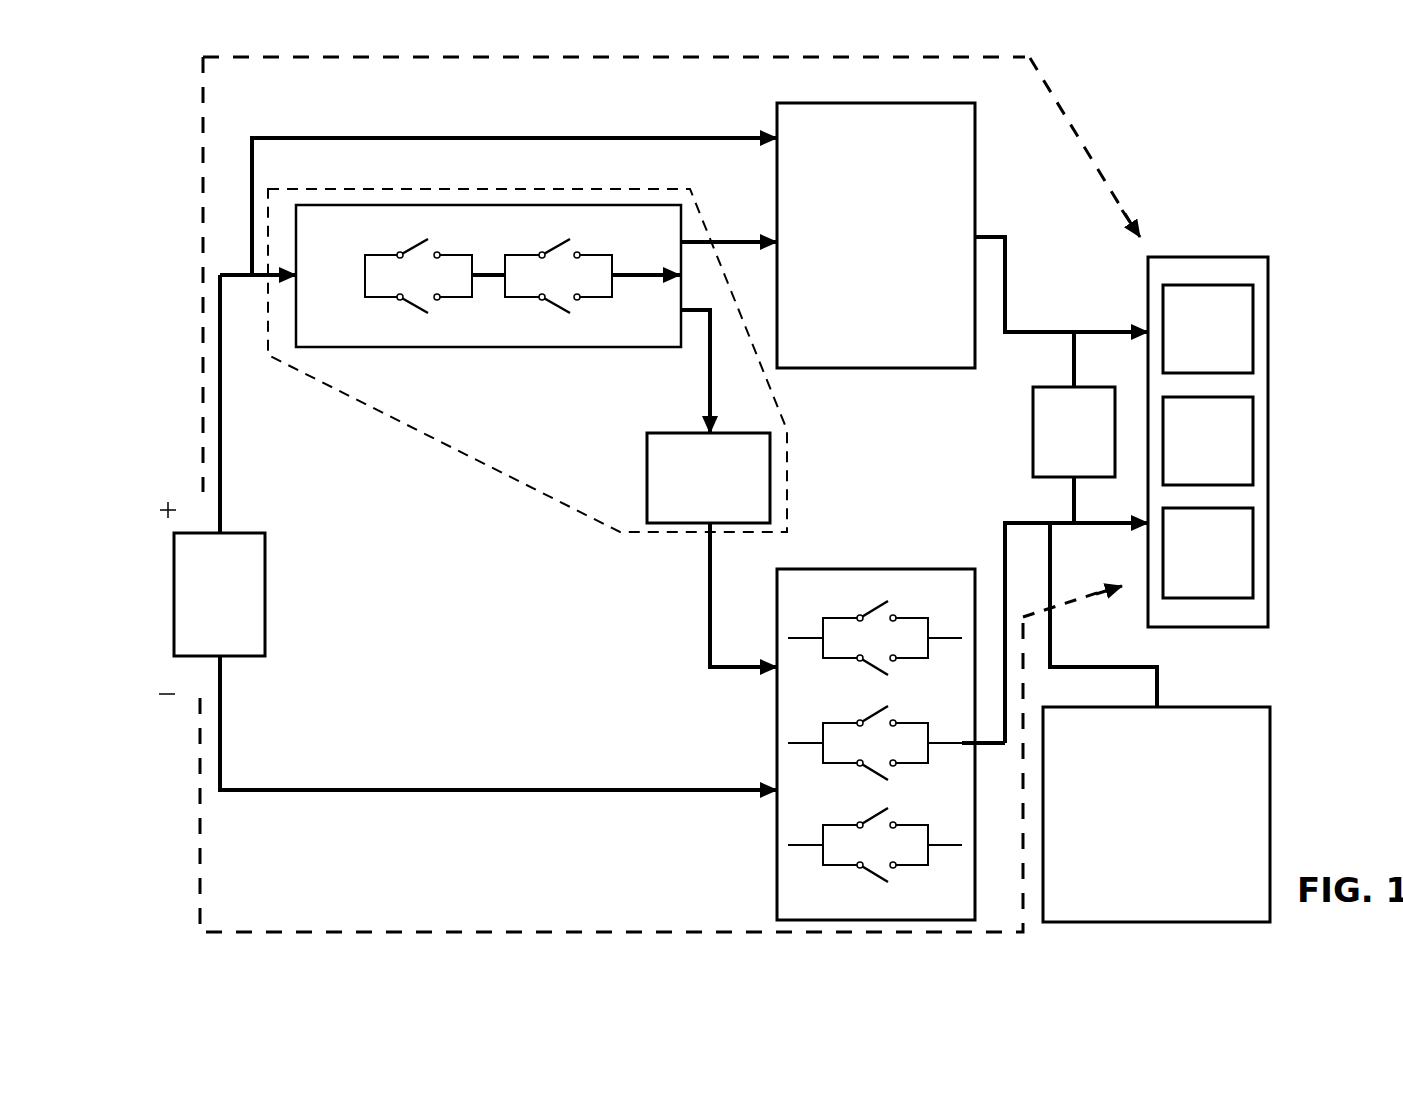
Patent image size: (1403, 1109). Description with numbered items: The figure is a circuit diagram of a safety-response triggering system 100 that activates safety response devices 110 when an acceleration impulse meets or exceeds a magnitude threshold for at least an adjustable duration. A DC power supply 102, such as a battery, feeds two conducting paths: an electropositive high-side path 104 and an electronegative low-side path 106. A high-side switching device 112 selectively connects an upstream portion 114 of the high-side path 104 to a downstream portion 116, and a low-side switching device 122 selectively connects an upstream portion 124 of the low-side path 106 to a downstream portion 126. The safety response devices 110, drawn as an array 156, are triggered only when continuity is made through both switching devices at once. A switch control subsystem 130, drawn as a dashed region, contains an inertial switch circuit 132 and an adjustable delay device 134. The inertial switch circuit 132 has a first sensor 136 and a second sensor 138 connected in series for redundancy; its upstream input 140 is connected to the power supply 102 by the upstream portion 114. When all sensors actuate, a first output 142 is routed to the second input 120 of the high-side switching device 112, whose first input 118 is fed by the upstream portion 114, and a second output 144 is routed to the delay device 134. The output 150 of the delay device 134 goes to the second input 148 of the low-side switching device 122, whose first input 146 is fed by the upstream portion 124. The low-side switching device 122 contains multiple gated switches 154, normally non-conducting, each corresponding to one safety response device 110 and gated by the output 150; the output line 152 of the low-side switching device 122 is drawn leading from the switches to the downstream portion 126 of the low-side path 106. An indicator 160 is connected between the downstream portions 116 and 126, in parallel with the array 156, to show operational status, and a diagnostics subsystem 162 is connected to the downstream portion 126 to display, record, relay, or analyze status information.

The safety-response triggering system 100 is at (1172, 157).
The DC power supply 102 is at (212, 598).
The high-side path 104 is at (432, 58).
The low-side path 106 is at (325, 931).
The safety response devices 110 is at (1208, 441).
The high-side switching device 112 is at (876, 235).
The upstream portion of the high-side path 114 is at (523, 138).
The downstream portion of the high-side path 116 is at (1007, 290).
The first input of the high-side switching device 118 is at (780, 140).
The second input of the high-side switching device 120 is at (780, 245).
The low-side switching device 122 is at (876, 744).
The upstream portion of the low-side path 124 is at (338, 789).
The downstream portion of the low-side path 126 is at (1003, 552).
The switch control subsystem 130 is at (498, 470).
The inertial switch circuit 132 is at (488, 276).
The delay device 134 is at (647, 468).
The first sensor 136 is at (368, 298).
The second sensor 138 is at (508, 298).
The upstream input of the inertial switch circuit 140 is at (302, 277).
The first output of the inertial switch circuit 142 is at (738, 240).
The second output of the inertial switch circuit 144 is at (695, 318).
The first input of the low-side switching device 146 is at (780, 788).
The second input of the low-side switching device 148 is at (780, 666).
The output of the delay device 150 is at (706, 600).
The switch circuit output line 152 is at (990, 738).
The gated switches 154 is at (850, 606).
The safety response device array 156 is at (1246, 257).
The indicator 160 is at (1074, 427).
The diagnostics subsystem 162 is at (1156, 722).